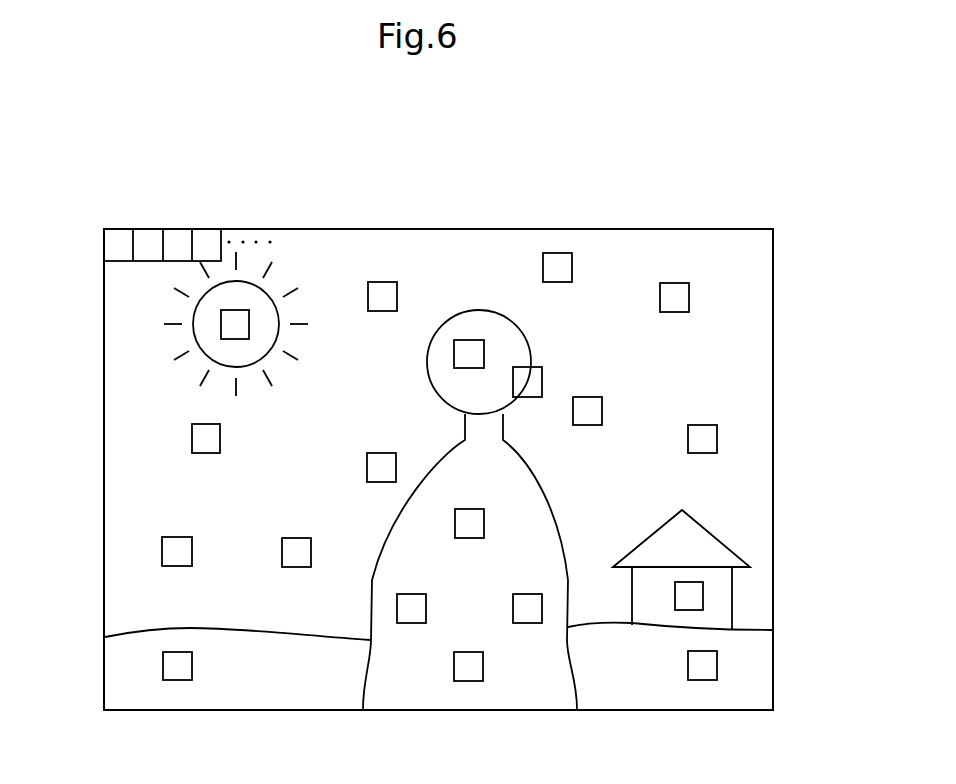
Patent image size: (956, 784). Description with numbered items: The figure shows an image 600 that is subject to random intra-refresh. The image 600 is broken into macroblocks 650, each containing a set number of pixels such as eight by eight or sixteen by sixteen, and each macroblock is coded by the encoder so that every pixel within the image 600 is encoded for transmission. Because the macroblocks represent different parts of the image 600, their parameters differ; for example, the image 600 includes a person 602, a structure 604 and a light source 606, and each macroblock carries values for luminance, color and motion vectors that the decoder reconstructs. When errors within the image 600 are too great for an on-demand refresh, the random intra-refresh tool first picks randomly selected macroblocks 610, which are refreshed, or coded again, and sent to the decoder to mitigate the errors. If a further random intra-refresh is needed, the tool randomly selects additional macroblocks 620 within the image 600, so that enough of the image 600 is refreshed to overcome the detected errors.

The image 600 is at (105, 463).
The person 602 is at (547, 490).
The structure 604 is at (672, 518).
The light source 606 is at (270, 295).
The randomly selected macroblocks 610 is at (477, 429).
The macroblocks 620 is at (500, 466).
The macroblocks 650 is at (118, 227).